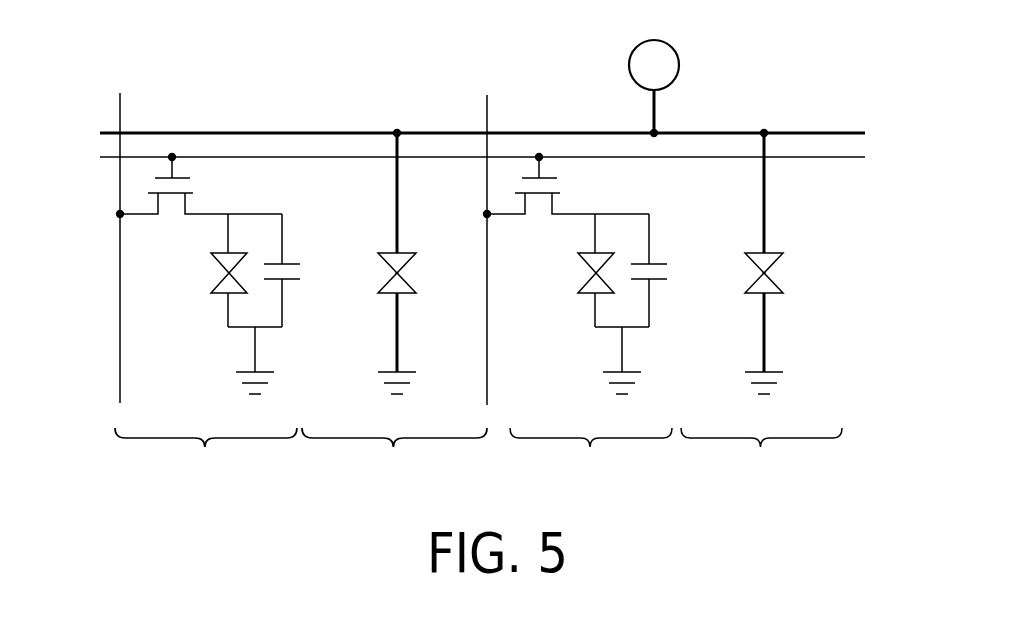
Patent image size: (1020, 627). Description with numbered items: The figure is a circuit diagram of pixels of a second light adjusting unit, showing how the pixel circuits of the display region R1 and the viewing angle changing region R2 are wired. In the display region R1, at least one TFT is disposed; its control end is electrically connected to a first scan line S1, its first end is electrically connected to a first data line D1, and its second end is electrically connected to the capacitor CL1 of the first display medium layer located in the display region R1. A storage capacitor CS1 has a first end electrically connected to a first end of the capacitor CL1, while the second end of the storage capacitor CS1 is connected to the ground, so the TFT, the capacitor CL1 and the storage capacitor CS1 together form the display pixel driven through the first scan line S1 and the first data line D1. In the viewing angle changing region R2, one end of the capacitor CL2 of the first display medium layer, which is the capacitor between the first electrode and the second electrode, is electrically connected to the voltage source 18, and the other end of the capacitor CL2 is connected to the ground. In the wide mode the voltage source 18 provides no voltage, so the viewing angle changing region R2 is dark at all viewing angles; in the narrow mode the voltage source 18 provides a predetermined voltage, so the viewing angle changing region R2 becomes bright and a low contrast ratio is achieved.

The voltage source 18 is at (679, 56).
The first data line D1 is at (119, 108).
The first scan line S1 is at (158, 155).
The element TFT is at (201, 185).
The capacitor of the first display medium layer CL1 is at (205, 270).
The storage capacitor CS1 is at (277, 270).
The capacitor of the first display medium layer in the viewing angle changing region CL2 is at (419, 263).
The display region R1 is at (393, 457).
The viewing angle changing region R2 is at (572, 457).